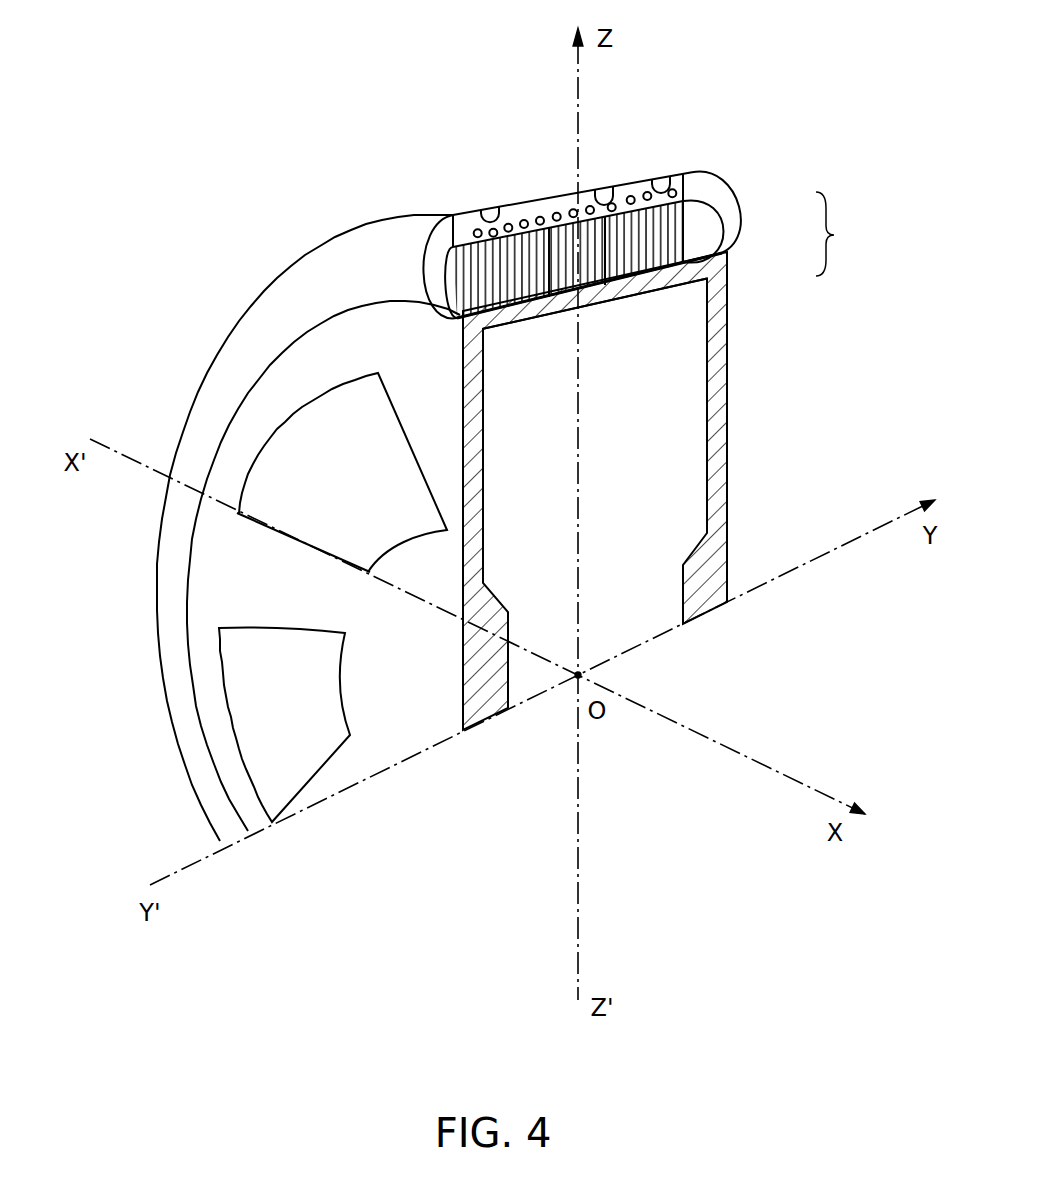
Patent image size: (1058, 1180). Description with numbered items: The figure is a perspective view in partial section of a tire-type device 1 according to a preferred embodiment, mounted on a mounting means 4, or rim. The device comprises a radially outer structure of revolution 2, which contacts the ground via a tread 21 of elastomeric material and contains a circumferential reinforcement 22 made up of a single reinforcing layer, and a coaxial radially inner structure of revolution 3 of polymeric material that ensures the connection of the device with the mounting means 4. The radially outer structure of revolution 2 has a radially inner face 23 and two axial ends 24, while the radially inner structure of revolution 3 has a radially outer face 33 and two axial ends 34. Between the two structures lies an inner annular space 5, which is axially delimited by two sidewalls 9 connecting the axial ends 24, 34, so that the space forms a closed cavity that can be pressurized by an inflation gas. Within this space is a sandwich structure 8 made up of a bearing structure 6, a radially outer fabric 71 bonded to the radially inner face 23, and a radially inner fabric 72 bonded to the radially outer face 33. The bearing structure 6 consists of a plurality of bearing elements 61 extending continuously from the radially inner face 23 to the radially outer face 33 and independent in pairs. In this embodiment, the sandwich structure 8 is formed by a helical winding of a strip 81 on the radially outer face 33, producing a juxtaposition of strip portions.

The tire-type device 1 is at (237, 190).
The radially outer structure of revolution 2 is at (505, 206).
The radially inner structure of revolution 3 is at (530, 320).
The mounting means 4 is at (240, 445).
The inner annular space 5 is at (458, 282).
The bearing structure 6 is at (697, 228).
The sandwich structure 8 is at (834, 234).
The sidewall 9 is at (423, 258).
The tread 21 is at (561, 196).
The circumferential reinforcement 22 is at (633, 199).
The radially inner face 23 is at (685, 190).
The axial end 24 is at (450, 240).
The radially outer face 33 is at (608, 260).
The axial end 34 is at (457, 323).
The bearing element 61 is at (705, 283).
The radially outer fabric 71 is at (682, 205).
The radially inner fabric 72 is at (699, 250).
The strip 81 is at (549, 274).